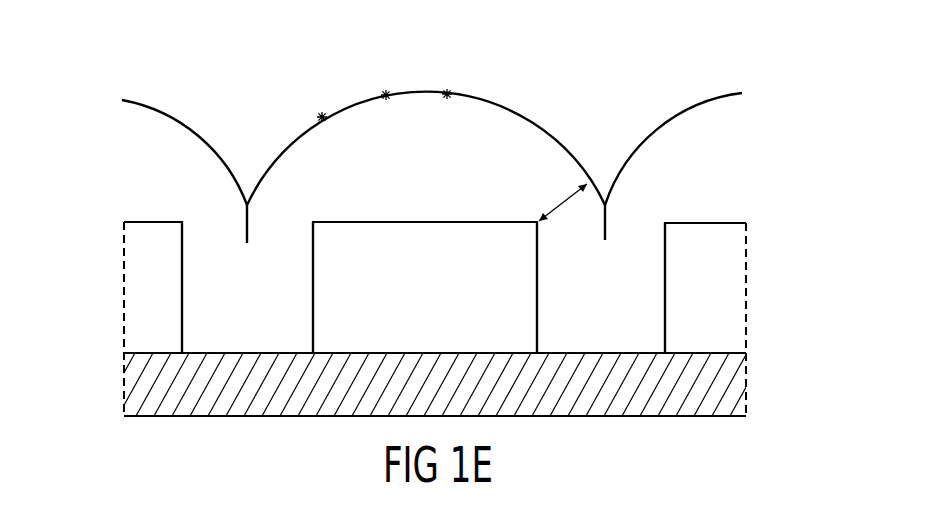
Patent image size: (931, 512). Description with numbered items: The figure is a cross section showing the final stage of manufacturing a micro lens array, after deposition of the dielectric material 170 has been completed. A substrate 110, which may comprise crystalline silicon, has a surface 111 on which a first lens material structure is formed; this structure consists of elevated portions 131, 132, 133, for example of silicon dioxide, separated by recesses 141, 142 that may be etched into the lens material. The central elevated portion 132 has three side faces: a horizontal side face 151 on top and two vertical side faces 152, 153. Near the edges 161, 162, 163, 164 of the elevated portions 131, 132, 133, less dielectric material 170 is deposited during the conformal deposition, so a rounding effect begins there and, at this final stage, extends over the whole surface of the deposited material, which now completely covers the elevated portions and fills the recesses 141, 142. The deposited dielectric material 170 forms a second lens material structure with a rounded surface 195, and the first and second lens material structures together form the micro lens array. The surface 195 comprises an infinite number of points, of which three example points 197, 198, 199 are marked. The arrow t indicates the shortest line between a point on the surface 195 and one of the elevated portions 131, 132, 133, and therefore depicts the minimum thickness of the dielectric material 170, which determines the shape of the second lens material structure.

The substrate 110 is at (733, 383).
The surface of the substrate 111 is at (747, 348).
The elevated portion 131 is at (142, 300).
The elevated portion 132 is at (447, 248).
The elevated portion 133 is at (730, 287).
The recess 141 is at (215, 352).
The recess 142 is at (633, 352).
The horizontal side face 151 is at (380, 222).
The vertical side face 152 is at (313, 295).
The vertical side face 153 is at (537, 292).
The edge 161 is at (313, 222).
The edge 162 is at (537, 222).
The edge 163 is at (182, 222).
The edge 164 is at (665, 223).
The dielectric material 170 is at (500, 127).
The surface of the second lens material structure 195 is at (567, 148).
The point on the surface 197 is at (322, 115).
The point on the surface 198 is at (386, 93).
The point on the surface 199 is at (447, 92).
The arrow t is at (563, 199).